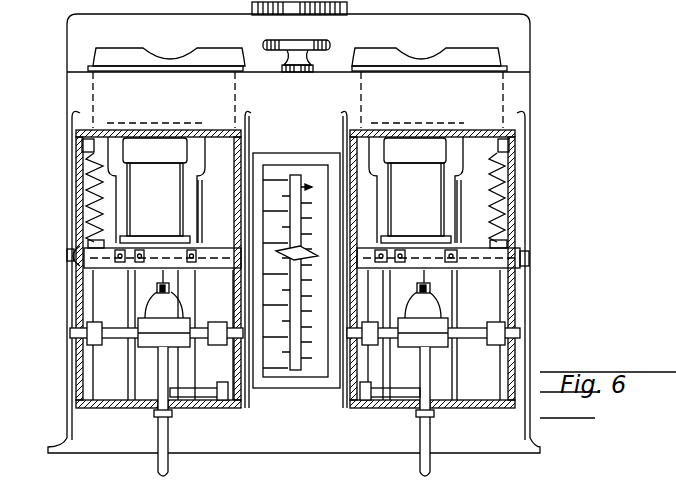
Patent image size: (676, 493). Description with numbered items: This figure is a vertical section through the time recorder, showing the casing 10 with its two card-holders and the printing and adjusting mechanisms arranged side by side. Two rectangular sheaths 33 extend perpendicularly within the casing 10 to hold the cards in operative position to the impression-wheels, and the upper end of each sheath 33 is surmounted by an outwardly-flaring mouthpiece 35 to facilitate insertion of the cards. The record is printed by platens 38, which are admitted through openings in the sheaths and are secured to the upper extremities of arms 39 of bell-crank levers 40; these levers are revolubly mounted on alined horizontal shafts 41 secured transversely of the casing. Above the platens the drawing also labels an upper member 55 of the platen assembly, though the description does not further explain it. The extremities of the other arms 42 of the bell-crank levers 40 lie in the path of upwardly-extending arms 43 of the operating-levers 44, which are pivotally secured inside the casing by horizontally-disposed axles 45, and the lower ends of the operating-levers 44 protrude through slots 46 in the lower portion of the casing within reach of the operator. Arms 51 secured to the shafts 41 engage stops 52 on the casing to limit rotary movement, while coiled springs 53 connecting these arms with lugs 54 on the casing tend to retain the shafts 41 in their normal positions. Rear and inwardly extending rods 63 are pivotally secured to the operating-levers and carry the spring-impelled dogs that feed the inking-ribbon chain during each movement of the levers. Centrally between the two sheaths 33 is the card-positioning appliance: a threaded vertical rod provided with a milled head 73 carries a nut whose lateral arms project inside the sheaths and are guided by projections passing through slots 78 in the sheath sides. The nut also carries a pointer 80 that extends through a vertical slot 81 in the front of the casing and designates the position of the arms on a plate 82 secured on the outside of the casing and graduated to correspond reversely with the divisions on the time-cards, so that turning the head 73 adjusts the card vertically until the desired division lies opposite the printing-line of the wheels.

The casing 10 is at (549, 216).
The sheath 33 is at (505, 100).
The mouthpiece 35 is at (218, 58).
The platen 38 is at (285, 190).
The arm 39 is at (204, 192).
The bell-crank lever 40 is at (285, 203).
The shaft 41 is at (70, 258).
The arm 42 is at (284, 283).
The arm 43 is at (166, 310).
The operating-lever 44 is at (158, 432).
The axle 45 is at (72, 334).
The slot 46 is at (173, 414).
The arm 51 is at (64, 256).
The stop 52 is at (90, 241).
The coiled spring 53 is at (88, 183).
The lug 54 is at (82, 146).
The cap 55 is at (285, 143).
The rod 63 is at (236, 410).
The milled head 73 is at (318, 45).
The slot 78 is at (296, 335).
The pointer 80 is at (312, 252).
The vertical slot 81 is at (296, 370).
The plate 82 is at (269, 376).